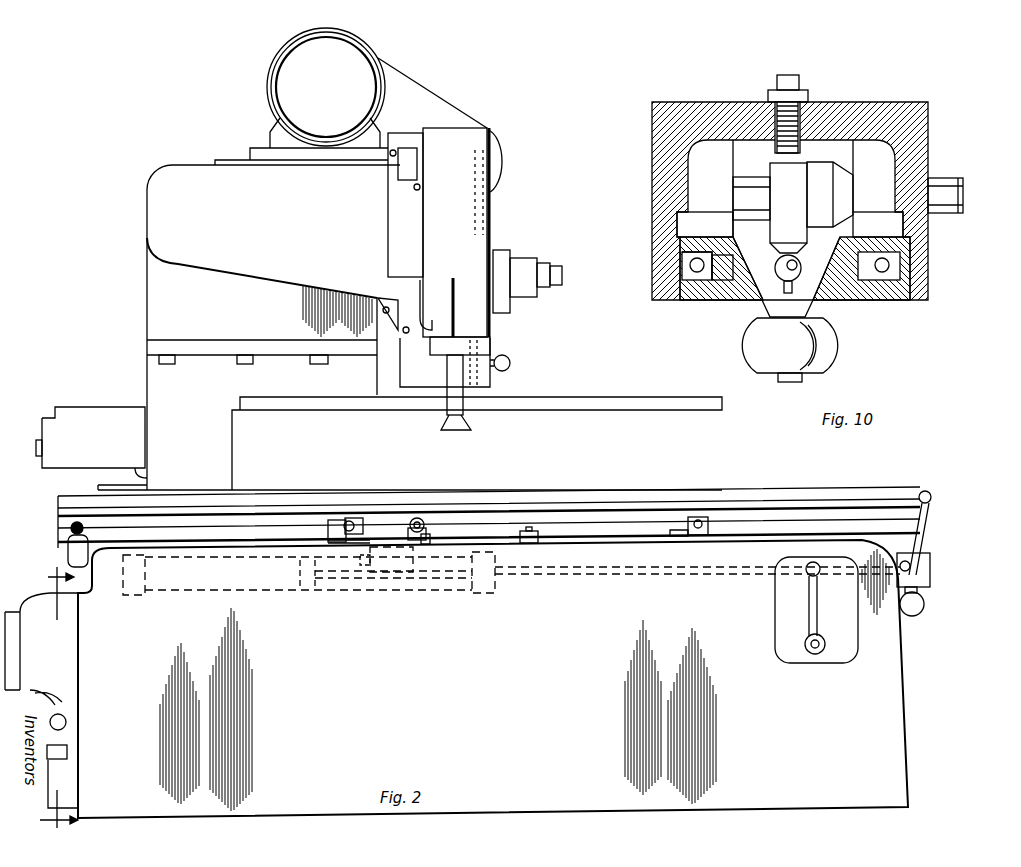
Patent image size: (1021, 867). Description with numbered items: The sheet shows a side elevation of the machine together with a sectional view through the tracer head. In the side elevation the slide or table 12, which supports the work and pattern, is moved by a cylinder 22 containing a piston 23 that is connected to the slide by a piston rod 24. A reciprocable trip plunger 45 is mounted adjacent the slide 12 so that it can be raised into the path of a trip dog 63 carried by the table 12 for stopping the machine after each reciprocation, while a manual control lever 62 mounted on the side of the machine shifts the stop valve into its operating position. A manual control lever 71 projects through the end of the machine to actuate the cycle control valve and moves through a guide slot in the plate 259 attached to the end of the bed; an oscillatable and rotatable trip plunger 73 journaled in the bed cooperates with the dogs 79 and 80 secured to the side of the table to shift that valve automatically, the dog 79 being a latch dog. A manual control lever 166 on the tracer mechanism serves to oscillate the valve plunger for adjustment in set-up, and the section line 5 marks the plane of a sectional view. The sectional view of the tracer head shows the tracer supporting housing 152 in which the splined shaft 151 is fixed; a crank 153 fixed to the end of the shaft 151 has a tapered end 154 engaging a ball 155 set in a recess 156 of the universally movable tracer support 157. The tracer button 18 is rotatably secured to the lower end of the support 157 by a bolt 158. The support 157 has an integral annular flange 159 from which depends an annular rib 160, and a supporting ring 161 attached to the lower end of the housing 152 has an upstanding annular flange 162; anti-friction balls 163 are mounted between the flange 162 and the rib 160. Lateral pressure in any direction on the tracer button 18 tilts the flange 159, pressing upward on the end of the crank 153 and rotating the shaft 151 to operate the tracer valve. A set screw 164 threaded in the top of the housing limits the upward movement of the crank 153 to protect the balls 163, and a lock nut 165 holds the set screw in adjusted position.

In FIG. 2, the section line 5 is at (52, 698).
In FIG. 2, the slide 12 is at (858, 492).
In FIG. 2, the cylinder 22 is at (280, 588).
In FIG. 2, the piston 23 is at (313, 588).
In FIG. 2, the piston rod 24 is at (610, 570).
In FIG. 2, the trip plunger 45 is at (428, 540).
In FIG. 2, the manual control lever 62 is at (810, 620).
In FIG. 2, the trip dog 63 is at (427, 520).
In FIG. 2, the manual control lever 71 is at (935, 497).
In FIG. 2, the trip plunger 73 is at (537, 538).
In FIG. 2, the dog 79 is at (333, 520).
In FIG. 2, the dog 80 is at (673, 535).
In FIG. 2, the manual control lever 166 is at (511, 363).
In FIG. 2, the plate 259 is at (930, 565).
In FIG. 10, the tracer button 18 is at (826, 340).
In FIG. 10, the splined shaft 151 is at (945, 188).
In FIG. 10, the tracer supporting housing 152 is at (928, 140).
In FIG. 10, the crank 153 is at (783, 172).
In FIG. 10, the tapered end 154 is at (780, 275).
In FIG. 10, the ball 155 is at (775, 300).
In FIG. 10, the recess 156 is at (850, 300).
In FIG. 10, the tracer support 157 is at (815, 305).
In FIG. 10, the bolt 158 is at (783, 380).
In FIG. 10, the annular flange 159 is at (690, 252).
In FIG. 10, the annular rib 160 is at (695, 268).
In FIG. 10, the supporting ring 161 is at (930, 287).
In FIG. 10, the annular flange 162 is at (723, 280).
In FIG. 10, the balls 163 is at (695, 275).
In FIG. 10, the set screw 164 is at (800, 80).
In FIG. 10, the lock nut 165 is at (806, 95).